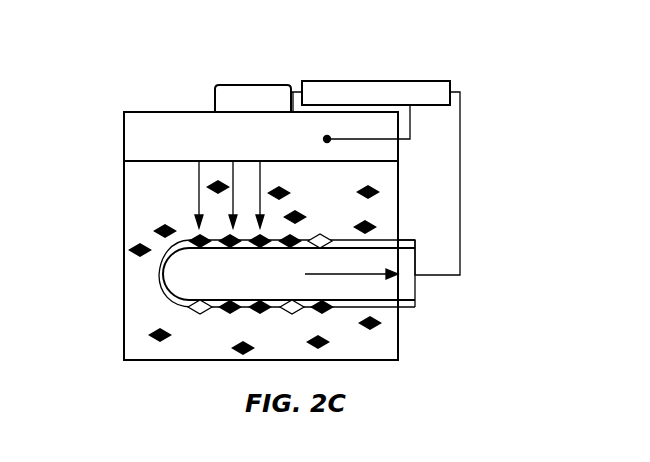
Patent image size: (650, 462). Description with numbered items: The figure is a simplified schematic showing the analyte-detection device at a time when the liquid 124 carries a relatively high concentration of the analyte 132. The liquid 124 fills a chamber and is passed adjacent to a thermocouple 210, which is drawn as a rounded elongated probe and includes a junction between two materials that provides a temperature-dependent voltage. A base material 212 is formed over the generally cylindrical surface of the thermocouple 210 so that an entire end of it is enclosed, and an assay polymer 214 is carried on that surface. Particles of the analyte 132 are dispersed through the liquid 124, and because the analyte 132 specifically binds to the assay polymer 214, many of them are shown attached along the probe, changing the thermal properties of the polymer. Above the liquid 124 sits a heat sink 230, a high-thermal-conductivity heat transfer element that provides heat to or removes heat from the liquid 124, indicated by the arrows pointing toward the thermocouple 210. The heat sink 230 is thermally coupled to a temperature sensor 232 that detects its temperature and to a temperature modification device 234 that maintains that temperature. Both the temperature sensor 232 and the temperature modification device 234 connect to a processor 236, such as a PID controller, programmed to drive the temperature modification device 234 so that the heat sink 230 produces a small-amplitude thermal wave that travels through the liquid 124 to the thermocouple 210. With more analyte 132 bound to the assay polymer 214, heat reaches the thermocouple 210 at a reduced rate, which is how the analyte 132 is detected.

The liquid 124 is at (136, 318).
The analyte 132 is at (156, 343).
The thermocouple 210 is at (407, 287).
The base material 212 is at (405, 307).
The assay polymer 214 is at (326, 238).
The heat sink 230 is at (158, 128).
The temperature sensor 232 is at (366, 143).
The temperature modification device 234 is at (251, 85).
The processor 236 is at (376, 81).